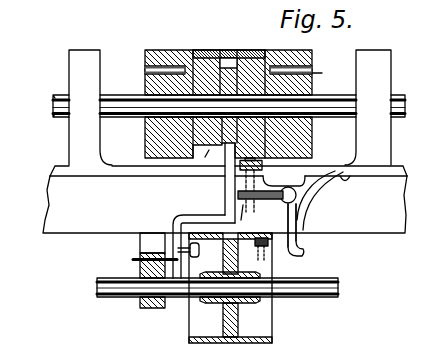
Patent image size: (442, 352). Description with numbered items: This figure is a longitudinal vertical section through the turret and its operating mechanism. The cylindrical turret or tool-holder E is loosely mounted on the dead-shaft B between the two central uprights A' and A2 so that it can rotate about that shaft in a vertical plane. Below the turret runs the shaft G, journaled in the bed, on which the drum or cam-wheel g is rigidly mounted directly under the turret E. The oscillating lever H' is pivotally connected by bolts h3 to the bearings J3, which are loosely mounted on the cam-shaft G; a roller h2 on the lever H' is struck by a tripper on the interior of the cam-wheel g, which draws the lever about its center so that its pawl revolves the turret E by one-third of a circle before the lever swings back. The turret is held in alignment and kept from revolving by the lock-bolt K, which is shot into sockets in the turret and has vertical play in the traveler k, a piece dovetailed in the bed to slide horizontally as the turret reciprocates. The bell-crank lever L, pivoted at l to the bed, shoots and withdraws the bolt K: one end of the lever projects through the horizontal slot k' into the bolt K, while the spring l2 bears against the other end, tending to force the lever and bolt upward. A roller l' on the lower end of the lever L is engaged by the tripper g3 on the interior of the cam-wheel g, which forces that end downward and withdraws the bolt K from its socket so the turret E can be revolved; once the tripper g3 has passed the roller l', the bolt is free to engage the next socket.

The upright A2 is at (84, 53).
The upright A' is at (368, 94).
The dead-shaft B is at (400, 97).
The turret E is at (168, 40).
The spring l2 is at (230, 50).
The roller l' is at (245, 152).
The pivot l is at (275, 119).
The oscillating lever H' is at (204, 233).
The lock-bolt K is at (262, 158).
The traveler k is at (286, 177).
The horizontal slot k' is at (244, 215).
The bell-crank lever L is at (293, 212).
The bearings J3 is at (140, 266).
The bolts h3 is at (135, 258).
The roller h2 is at (197, 251).
The cam-wheel g is at (273, 340).
The tripper g3 is at (257, 236).
The shaft G is at (321, 277).